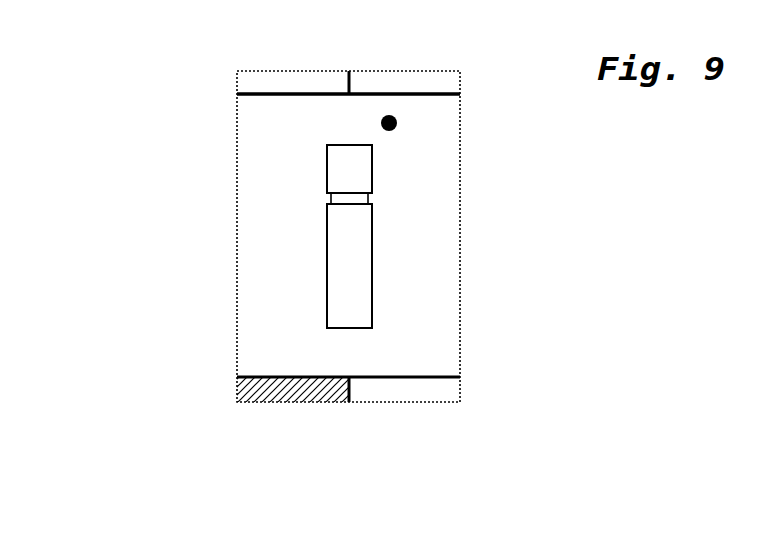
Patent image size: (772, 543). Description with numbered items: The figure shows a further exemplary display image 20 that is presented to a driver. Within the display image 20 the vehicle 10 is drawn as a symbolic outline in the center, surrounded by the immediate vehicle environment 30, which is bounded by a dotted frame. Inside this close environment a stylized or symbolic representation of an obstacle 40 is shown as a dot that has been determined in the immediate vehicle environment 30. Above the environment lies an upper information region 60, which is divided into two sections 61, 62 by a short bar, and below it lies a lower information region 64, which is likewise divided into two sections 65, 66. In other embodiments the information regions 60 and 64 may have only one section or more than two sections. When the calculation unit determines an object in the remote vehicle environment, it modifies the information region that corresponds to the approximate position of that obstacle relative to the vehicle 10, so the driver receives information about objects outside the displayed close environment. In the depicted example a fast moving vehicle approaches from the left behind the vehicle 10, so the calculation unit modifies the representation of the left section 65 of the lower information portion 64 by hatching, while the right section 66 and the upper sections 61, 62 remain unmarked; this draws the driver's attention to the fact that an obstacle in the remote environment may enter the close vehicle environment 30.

The vehicle 10 is at (357, 233).
The display image 20 is at (235, 132).
The immediate vehicle environment 30 is at (273, 320).
The obstacle 40 is at (406, 124).
The upper information region 60 is at (352, 64).
The section 61 is at (290, 83).
The section 62 is at (405, 83).
The lower information region 64 is at (352, 412).
The left section 65 is at (275, 402).
The section 66 is at (395, 390).